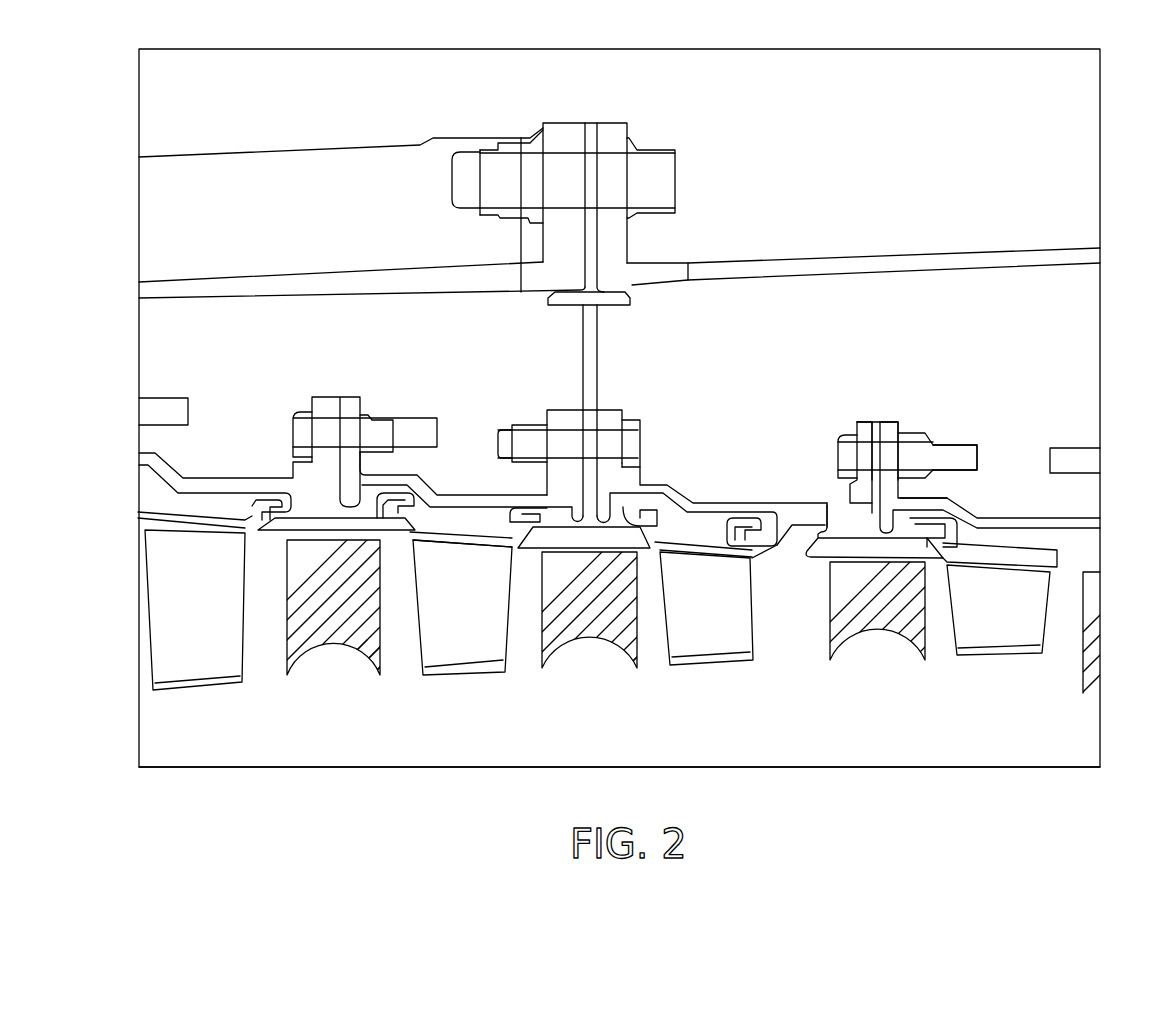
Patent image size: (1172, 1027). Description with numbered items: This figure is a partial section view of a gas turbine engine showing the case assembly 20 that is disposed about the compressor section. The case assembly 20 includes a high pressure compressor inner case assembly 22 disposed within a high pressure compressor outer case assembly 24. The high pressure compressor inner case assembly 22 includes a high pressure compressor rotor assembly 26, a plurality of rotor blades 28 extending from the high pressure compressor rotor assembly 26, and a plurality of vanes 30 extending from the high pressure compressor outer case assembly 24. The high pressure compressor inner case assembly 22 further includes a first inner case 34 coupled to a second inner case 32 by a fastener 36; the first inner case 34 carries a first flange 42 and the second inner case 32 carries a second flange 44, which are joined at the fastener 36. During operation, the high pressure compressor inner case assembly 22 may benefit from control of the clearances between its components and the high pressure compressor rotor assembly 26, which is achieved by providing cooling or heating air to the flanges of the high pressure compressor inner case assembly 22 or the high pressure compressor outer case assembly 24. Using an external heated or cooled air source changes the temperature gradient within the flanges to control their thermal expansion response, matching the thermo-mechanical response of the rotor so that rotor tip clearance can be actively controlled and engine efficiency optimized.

The case assembly 20 is at (1008, 70).
The high pressure compressor inner case assembly 22 is at (736, 408).
The high pressure compressor outer case assembly 24 is at (604, 104).
The high pressure compressor rotor assembly 26 is at (427, 738).
The rotor blades 28 is at (345, 622).
The vanes 30 is at (205, 622).
The second inner case 32 is at (940, 505).
The first inner case 34 is at (848, 500).
The fastener 36 is at (947, 455).
The first flange 42 is at (862, 430).
The second flange 44 is at (886, 430).